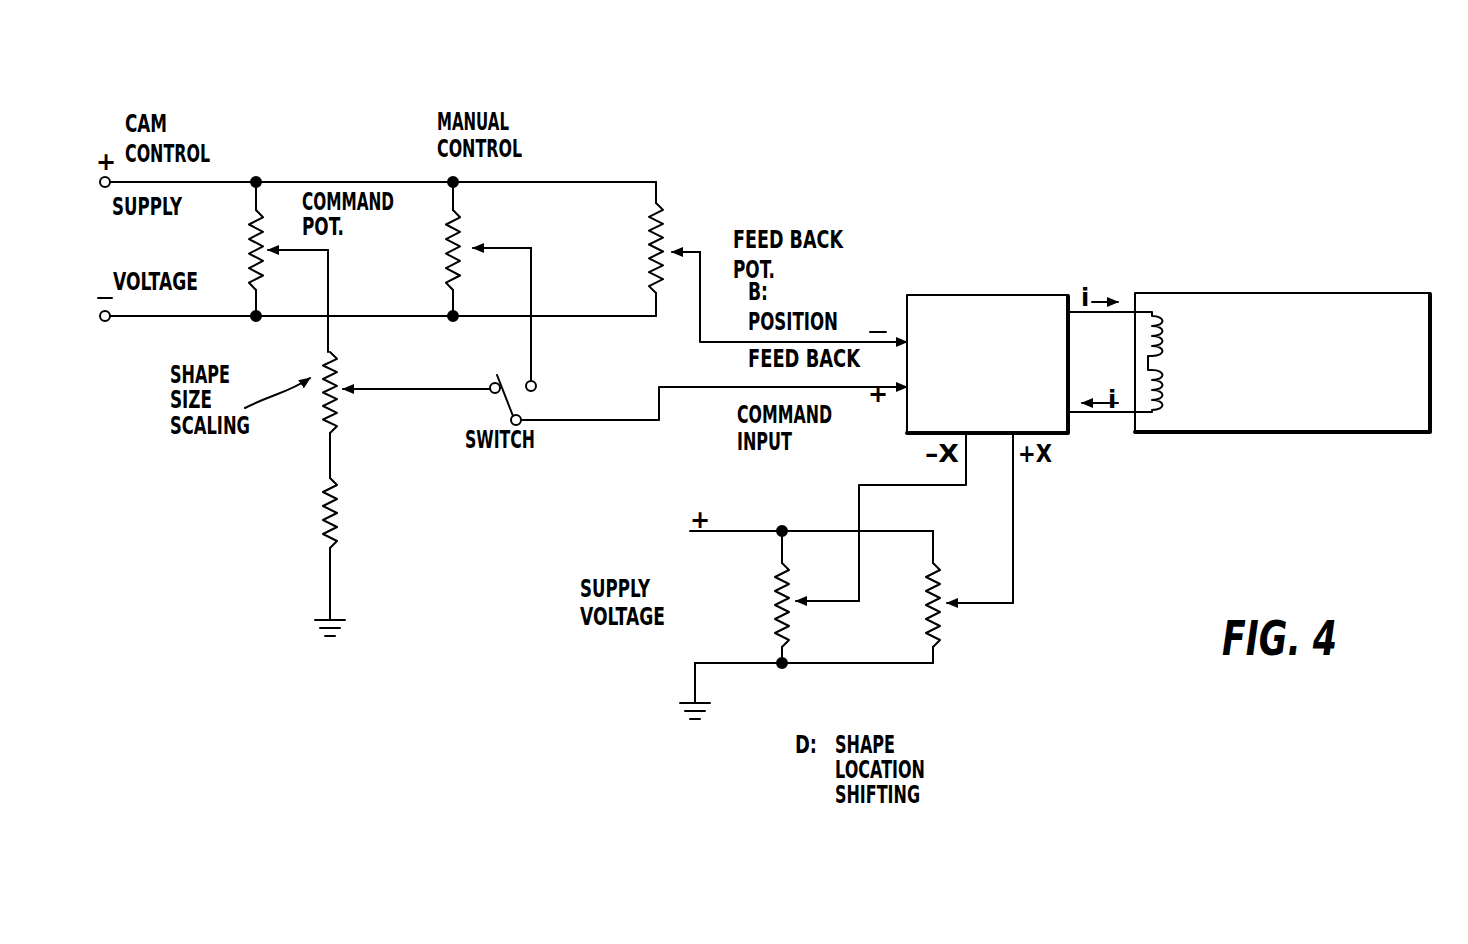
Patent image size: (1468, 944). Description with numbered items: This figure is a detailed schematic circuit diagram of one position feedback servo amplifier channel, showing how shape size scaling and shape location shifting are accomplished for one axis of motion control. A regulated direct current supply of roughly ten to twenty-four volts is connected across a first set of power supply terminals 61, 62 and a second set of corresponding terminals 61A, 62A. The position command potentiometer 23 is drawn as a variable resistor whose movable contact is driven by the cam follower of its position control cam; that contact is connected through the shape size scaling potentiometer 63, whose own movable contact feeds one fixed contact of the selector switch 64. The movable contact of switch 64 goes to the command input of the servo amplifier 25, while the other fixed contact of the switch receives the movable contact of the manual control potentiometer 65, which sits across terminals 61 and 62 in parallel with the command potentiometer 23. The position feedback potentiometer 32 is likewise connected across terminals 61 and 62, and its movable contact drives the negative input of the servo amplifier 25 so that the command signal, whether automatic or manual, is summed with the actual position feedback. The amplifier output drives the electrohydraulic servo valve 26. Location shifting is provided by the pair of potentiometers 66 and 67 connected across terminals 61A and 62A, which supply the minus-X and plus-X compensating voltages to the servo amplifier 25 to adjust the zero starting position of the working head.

The position command potentiometer 23 is at (262, 262).
The servo amplifier 25 is at (1003, 293).
The electrohydraulic servo valve 26 is at (1253, 293).
The position feedback potentiometer 32 is at (668, 248).
The power supply terminal 61 is at (582, 182).
The power supply terminal 62 is at (560, 316).
The shape size scaling potentiometer 63 is at (320, 425).
The selector switch 64 is at (496, 428).
The manual control potentiometer 65 is at (461, 228).
The potentiometer 66 is at (778, 592).
The potentiometer 67 is at (925, 604).
The power supply terminal 61A is at (730, 531).
The power supply terminal 62A is at (720, 663).